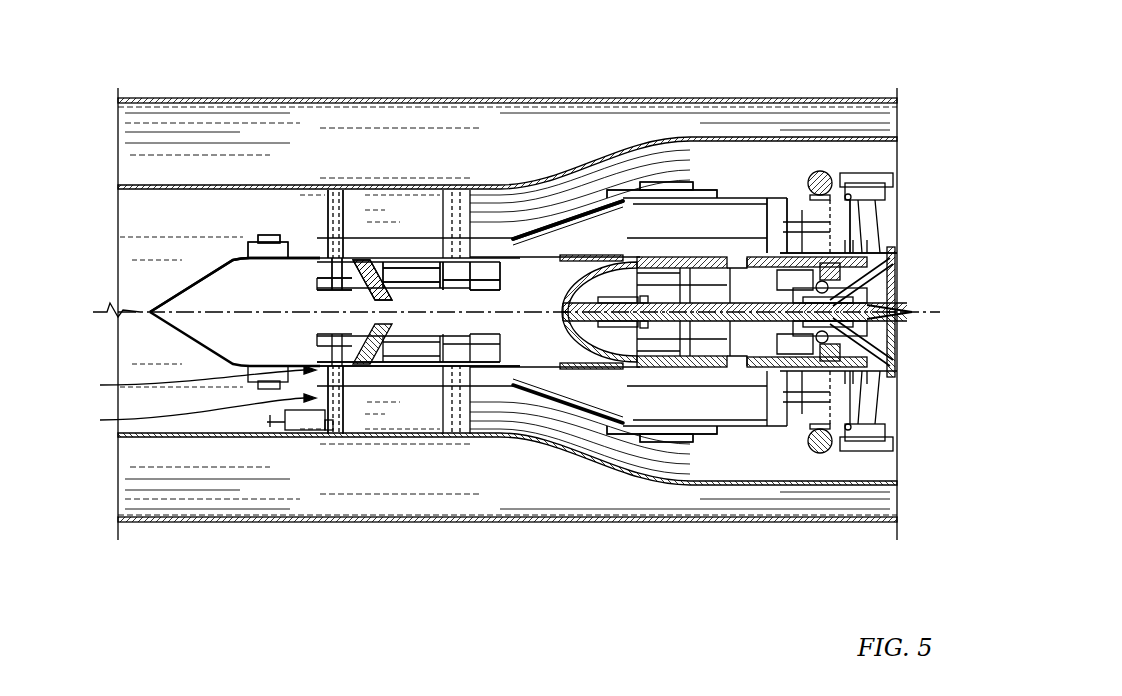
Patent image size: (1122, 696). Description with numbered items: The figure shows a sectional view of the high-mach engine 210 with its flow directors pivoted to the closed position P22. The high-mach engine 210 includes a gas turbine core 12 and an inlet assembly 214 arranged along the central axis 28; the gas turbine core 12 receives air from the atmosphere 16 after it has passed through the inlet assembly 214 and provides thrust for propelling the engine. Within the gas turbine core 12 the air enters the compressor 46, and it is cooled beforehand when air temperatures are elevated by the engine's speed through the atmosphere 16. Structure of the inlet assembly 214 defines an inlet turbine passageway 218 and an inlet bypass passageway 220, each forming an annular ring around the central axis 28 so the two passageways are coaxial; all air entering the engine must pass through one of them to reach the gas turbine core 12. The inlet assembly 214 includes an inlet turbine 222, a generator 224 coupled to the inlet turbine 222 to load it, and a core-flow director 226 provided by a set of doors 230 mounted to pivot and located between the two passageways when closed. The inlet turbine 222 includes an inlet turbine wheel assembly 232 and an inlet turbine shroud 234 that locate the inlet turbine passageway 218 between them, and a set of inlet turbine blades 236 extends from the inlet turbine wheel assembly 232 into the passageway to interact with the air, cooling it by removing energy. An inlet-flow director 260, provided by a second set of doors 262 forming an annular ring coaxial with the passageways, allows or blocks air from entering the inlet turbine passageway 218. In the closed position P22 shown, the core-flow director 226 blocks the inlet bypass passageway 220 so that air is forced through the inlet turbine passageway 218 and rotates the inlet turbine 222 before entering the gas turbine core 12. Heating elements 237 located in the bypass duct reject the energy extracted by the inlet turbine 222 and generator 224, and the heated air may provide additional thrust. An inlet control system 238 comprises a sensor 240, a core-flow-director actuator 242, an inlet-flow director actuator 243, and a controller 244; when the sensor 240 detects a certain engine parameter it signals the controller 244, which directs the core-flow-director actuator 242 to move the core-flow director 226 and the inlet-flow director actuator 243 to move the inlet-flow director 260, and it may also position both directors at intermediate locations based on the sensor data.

The high-mach engine 210 is at (131, 66).
The atmosphere 16 is at (110, 246).
The closed position P22 is at (582, 96).
The gas turbine core 12 is at (766, 167).
The compressor 46 is at (857, 167).
The central axis 28 is at (928, 310).
The inlet assembly 214 is at (378, 165).
The inlet-flow director actuator 243 is at (270, 233).
The inlet-flow director 260 is at (277, 234).
The set of doors 262 is at (307, 257).
The inlet turbine shroud 234 is at (365, 262).
The inlet turbine wheel assembly 232 is at (374, 276).
The heating elements 237 is at (413, 258).
The generator 224 is at (473, 283).
The set of doors 230 is at (575, 226).
The core-flow director 226 is at (594, 199).
The inlet turbine passageway 218 is at (185, 383).
The inlet bypass passageway 220 is at (185, 415).
The set of inlet turbine blades 236 is at (360, 365).
The inlet turbine 222 is at (344, 376).
The controller 244 is at (333, 430).
The sensor 240 is at (268, 421).
The core-flow-director actuator 242 is at (663, 442).
The inlet control system 238 is at (249, 594).